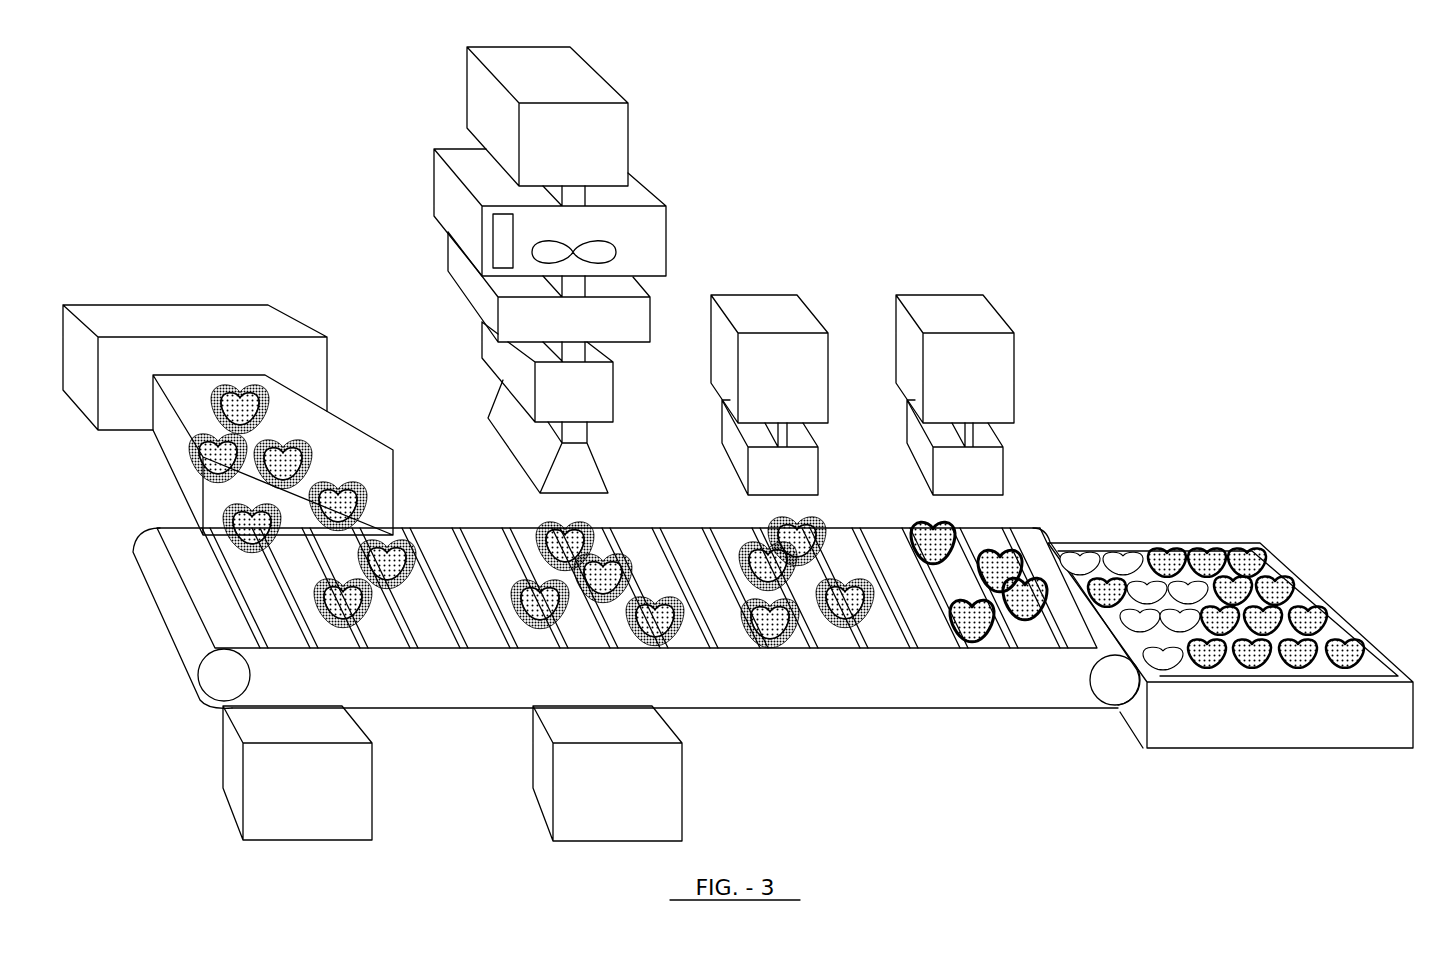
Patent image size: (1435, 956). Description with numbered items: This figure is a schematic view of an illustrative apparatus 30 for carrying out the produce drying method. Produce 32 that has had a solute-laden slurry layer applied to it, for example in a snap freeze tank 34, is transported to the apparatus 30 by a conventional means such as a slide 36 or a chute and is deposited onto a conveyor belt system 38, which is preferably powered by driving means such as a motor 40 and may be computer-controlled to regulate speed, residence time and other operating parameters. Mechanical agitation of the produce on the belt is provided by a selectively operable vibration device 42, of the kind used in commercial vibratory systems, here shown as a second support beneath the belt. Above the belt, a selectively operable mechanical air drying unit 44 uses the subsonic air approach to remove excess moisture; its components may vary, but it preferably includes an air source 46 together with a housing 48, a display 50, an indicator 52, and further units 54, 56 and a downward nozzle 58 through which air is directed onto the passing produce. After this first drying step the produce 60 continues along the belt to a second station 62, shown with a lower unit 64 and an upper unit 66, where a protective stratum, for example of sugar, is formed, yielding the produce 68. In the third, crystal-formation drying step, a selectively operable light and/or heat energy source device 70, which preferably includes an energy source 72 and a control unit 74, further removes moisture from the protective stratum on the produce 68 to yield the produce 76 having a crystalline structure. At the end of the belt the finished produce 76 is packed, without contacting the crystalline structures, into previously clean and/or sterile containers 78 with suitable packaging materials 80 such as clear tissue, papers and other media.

The apparatus 30 is at (968, 758).
The produce 32 is at (350, 480).
The snap freeze tank 34 is at (290, 318).
The slide 36 is at (167, 460).
The conveyor belt system 38 is at (167, 607).
The motor 40 is at (222, 757).
The vibration device 42 is at (533, 757).
The mechanical air drying unit 44 is at (553, 260).
The air source 46 is at (622, 93).
The control housing 48 is at (667, 222).
The display panel 50 is at (503, 248).
The continuous operation indicator 52 is at (620, 251).
The mixing unit 54 is at (470, 285).
The pump unit 56 is at (512, 358).
The dispensing nozzle 58 is at (515, 414).
The produce 60 is at (662, 593).
The heating station 62 is at (793, 356).
The heating station base 64 is at (822, 470).
The heating station head 66 is at (830, 373).
The produce 68 is at (857, 580).
The light and/or heat energy source device 70 is at (981, 356).
The energy source 72 is at (1008, 470).
The control unit 74 is at (1016, 373).
The produce 76 is at (1008, 550).
The containers 78 is at (1275, 750).
The packaging materials 80 is at (1130, 570).